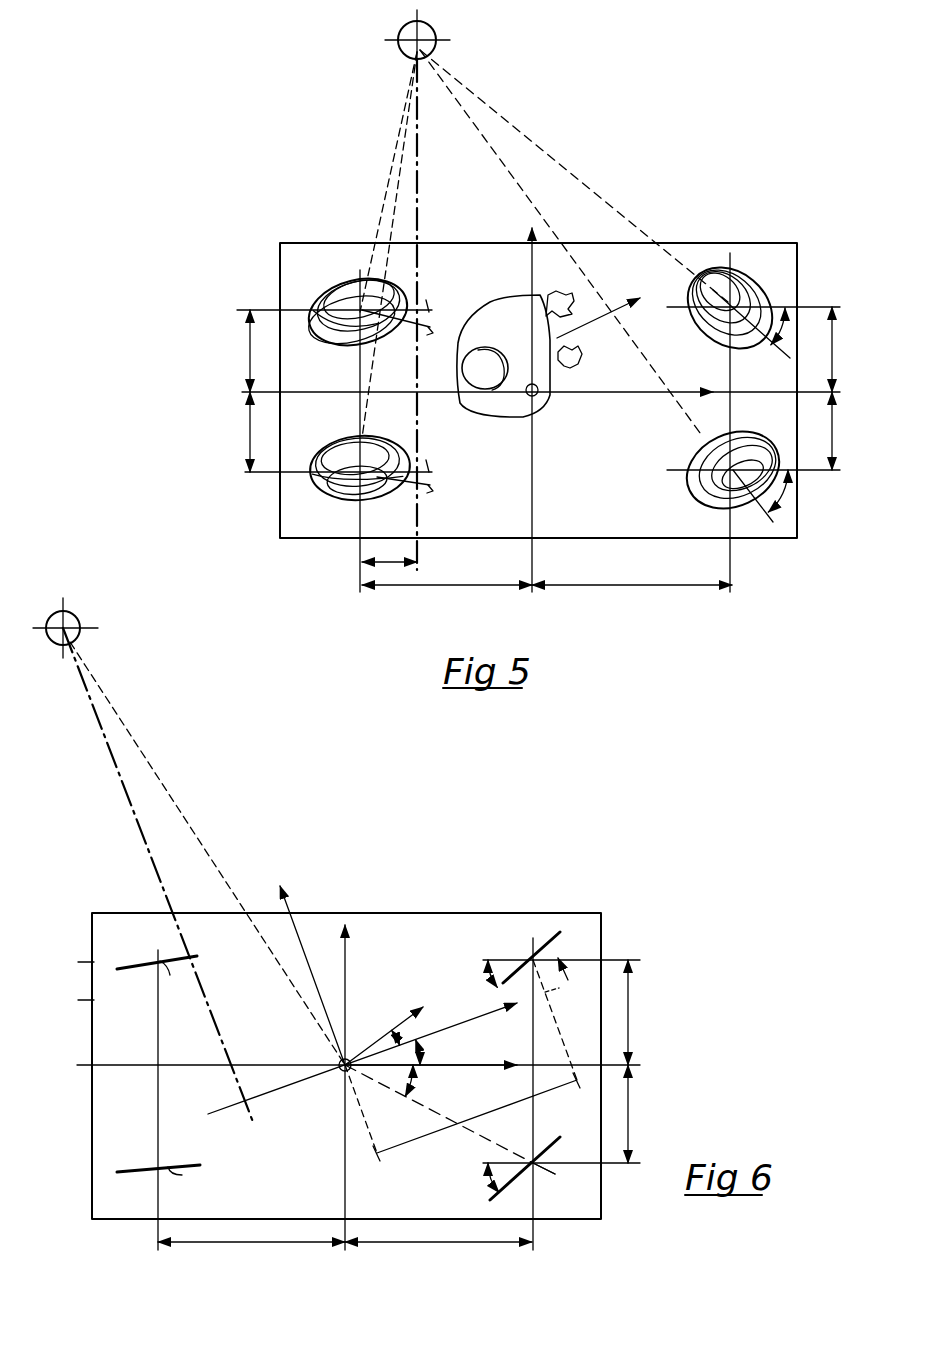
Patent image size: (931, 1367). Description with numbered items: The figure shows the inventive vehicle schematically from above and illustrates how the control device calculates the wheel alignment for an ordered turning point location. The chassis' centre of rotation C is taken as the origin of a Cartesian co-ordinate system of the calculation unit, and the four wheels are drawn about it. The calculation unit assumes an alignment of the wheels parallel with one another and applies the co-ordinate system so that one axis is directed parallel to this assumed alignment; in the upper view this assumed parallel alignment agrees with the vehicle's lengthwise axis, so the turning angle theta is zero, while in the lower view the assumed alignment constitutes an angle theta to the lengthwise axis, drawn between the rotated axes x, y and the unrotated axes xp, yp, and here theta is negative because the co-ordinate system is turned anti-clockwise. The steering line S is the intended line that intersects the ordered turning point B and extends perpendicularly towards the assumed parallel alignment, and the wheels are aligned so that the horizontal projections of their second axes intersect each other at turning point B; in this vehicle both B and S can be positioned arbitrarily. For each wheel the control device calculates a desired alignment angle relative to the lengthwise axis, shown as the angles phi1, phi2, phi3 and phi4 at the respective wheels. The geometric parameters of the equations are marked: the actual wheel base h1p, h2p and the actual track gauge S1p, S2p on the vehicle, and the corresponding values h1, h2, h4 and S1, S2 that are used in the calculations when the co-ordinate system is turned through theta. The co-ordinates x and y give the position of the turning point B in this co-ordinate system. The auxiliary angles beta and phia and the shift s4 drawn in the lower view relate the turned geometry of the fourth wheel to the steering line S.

In FIG. 5, the ordered turning point B is at (437, 34).
In FIG. 6, the ordered turning point B is at (84, 620).
In FIG. 5, the steering line S is at (420, 188).
In FIG. 6, the steering line S is at (118, 776).
In FIG. 5, the chassis centre of rotation C is at (535, 394).
In FIG. 5, the wheel alignment angle of first wheel phi1 is at (380, 312).
In FIG. 6, the wheel alignment angle of first wheel phi1 is at (157, 980).
In FIG. 5, the wheel alignment angle of second wheel phi2 is at (383, 468).
In FIG. 6, the wheel alignment angle of second wheel phi2 is at (166, 1182).
In FIG. 5, the wheel alignment angle of third wheel phi3 is at (748, 470).
In FIG. 6, the wheel alignment angle of third wheel phi3 is at (505, 1172).
In FIG. 5, the wheel alignment angle of fourth wheel phi4 is at (734, 308).
In FIG. 6, the wheel alignment angle of fourth wheel phi4 is at (505, 965).
In FIG. 5, the track gauge calculation value S1 is at (232, 391).
In FIG. 5, the track gauge calculation value S2 is at (848, 388).
In FIG. 5, the wheel base calculation value h1 is at (447, 596).
In FIG. 5, the distance right lamps to centre h2 is at (632, 607).
In FIG. 6, the track gauge S1p is at (69, 989).
In FIG. 6, the track gauge S2p is at (651, 1061).
In FIG. 6, the wheel base h1p is at (251, 1264).
In FIG. 6, the projected distance right h2p is at (438, 1264).
In FIG. 6, the wheel base calculation value h4 is at (476, 1117).
In FIG. 6, the x co-ordinate of turning point x is at (365, 1058).
In FIG. 6, the y co-ordinate of turning point y is at (308, 954).
In FIG. 6, the x' axis xp is at (435, 1082).
In FIG. 6, the y' axis yp is at (360, 992).
In FIG. 6, the co-ordinate system turning angle theta is at (430, 1050).
In FIG. 6, the angle beta is at (450, 1119).
In FIG. 6, the angle phi a phia is at (393, 1036).
In FIG. 6, the shift of fourth lamp s4 is at (567, 960).